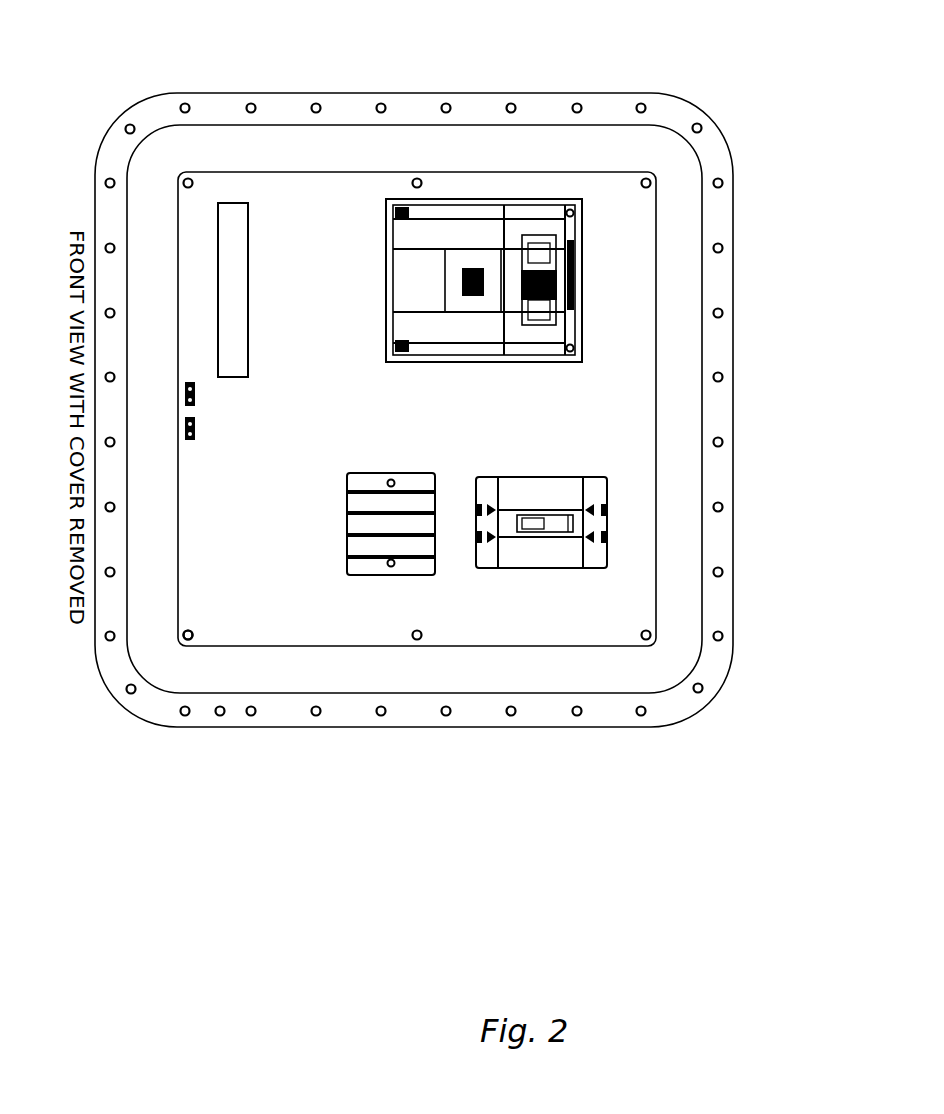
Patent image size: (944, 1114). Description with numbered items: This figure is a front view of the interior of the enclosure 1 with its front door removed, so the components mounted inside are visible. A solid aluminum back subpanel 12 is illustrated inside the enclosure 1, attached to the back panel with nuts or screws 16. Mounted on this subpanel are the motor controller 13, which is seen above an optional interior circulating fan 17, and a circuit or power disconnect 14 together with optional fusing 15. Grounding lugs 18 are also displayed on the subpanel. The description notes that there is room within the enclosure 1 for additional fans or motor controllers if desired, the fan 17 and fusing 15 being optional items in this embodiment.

The enclosure 1 is at (728, 145).
The solid aluminum back subpanel 12 is at (657, 293).
The motor controller 13 is at (537, 197).
The power disconnect 14 is at (610, 565).
The fusing 15 is at (395, 575).
The nuts or screws 16 is at (195, 648).
The interior circulating fan 17 is at (250, 245).
The grounding lugs 18 is at (182, 377).